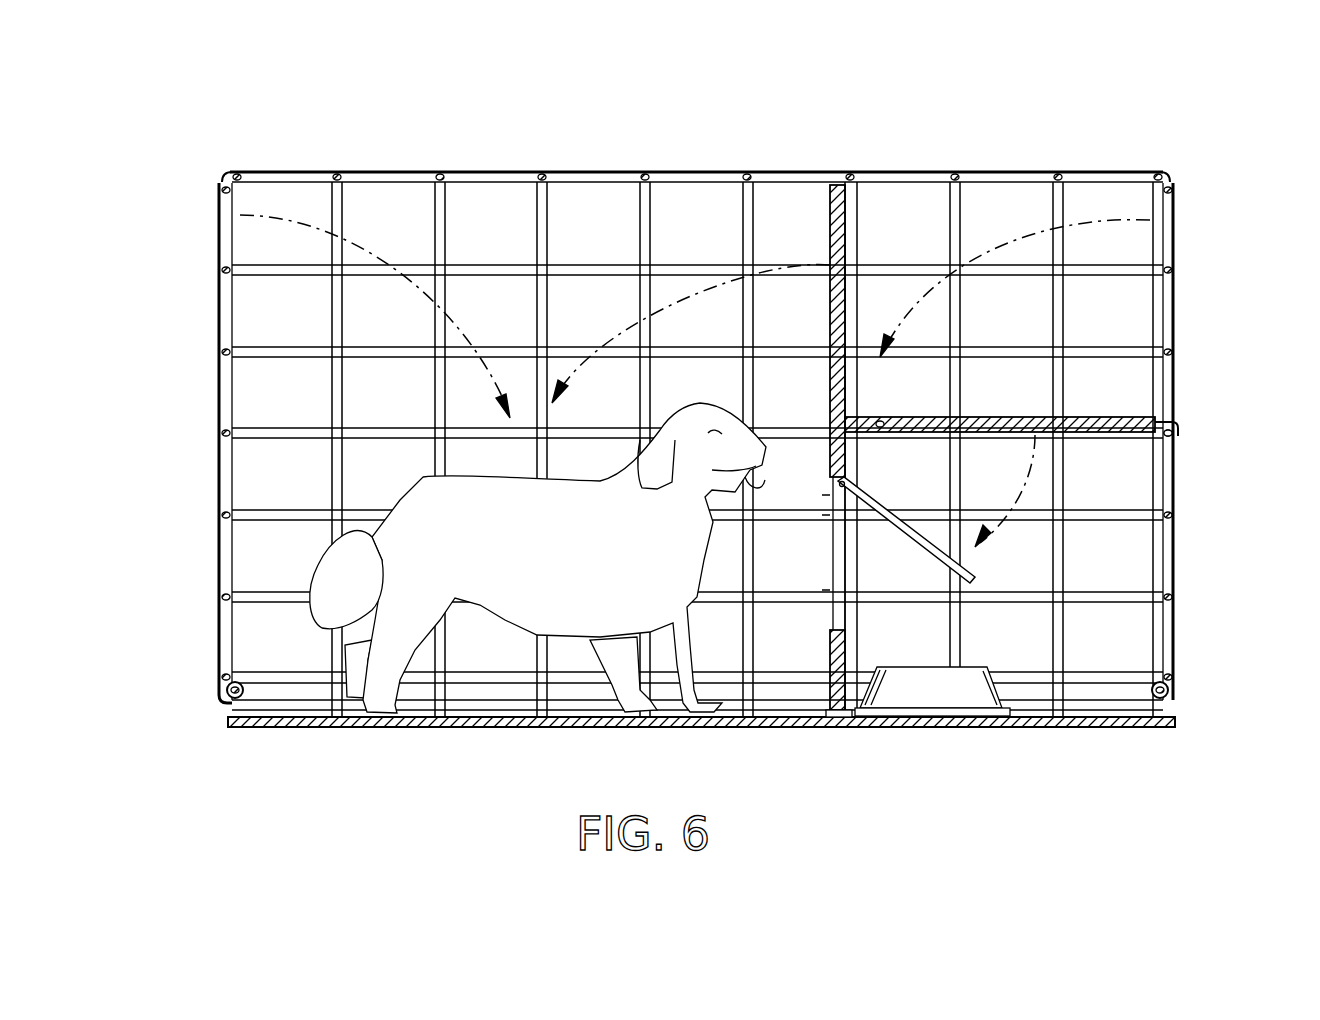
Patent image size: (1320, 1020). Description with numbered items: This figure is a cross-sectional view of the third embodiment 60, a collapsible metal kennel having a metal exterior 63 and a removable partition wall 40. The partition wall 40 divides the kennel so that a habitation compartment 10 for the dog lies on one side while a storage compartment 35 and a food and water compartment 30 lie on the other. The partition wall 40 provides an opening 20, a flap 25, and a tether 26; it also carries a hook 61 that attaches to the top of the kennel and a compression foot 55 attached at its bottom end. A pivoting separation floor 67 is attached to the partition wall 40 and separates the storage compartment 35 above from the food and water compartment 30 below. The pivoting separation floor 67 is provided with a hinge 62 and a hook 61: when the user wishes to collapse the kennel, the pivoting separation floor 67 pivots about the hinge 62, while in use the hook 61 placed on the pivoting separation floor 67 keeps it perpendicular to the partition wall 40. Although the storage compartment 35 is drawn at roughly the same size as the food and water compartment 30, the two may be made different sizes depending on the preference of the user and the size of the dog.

The third embodiment 60 is at (388, 80).
The hook 61 is at (228, 170).
The habitation compartment 10 is at (490, 200).
The storage compartment 35 is at (1005, 195).
The hinge 62 is at (888, 420).
The pivoting separation floor 67 is at (1108, 418).
The flap 25 is at (842, 618).
The food and water compartment 30 is at (1118, 634).
The metal exterior 63 is at (655, 728).
The opening 20 is at (835, 593).
The compression foot 55 is at (845, 706).
The partition wall 40 is at (850, 684).
The tether 26 is at (905, 592).